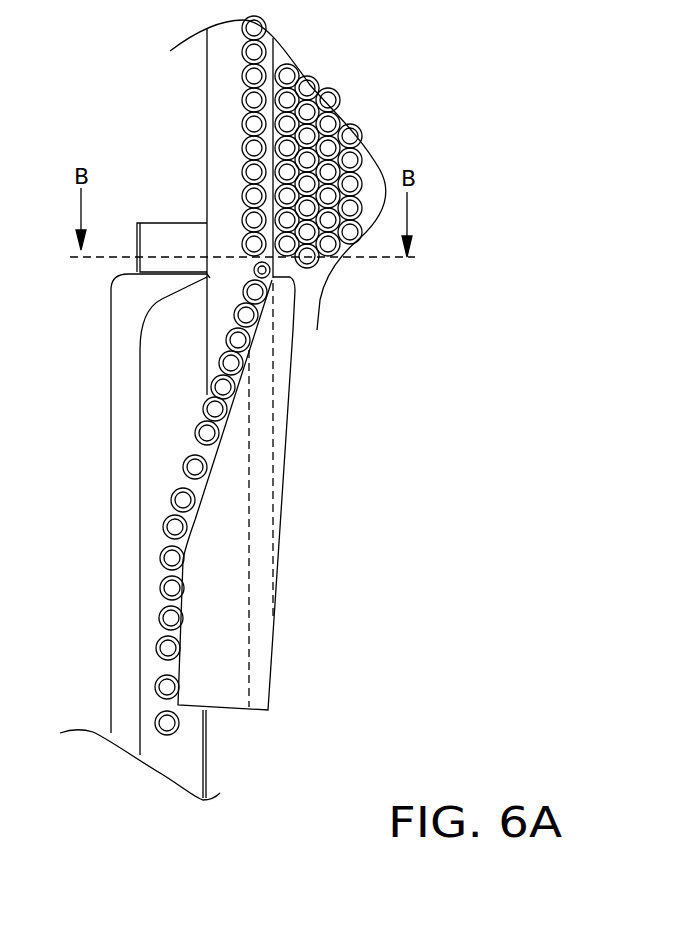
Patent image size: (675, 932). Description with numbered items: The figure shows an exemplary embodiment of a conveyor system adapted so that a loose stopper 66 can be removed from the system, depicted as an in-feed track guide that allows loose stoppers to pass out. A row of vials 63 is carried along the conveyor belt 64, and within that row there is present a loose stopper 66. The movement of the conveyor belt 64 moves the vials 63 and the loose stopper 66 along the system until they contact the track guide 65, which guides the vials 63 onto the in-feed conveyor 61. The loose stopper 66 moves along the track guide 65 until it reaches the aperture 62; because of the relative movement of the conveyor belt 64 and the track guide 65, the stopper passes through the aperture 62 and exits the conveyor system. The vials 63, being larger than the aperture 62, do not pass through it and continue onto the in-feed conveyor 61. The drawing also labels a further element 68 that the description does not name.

The in-feed conveyor 61 is at (162, 240).
The aperture 62 is at (262, 412).
The vials 63 is at (273, 292).
The conveyor belt 64 is at (222, 107).
The track guide 65 is at (220, 688).
The loose stopper 66 is at (270, 266).
The housing body 68 is at (125, 370).